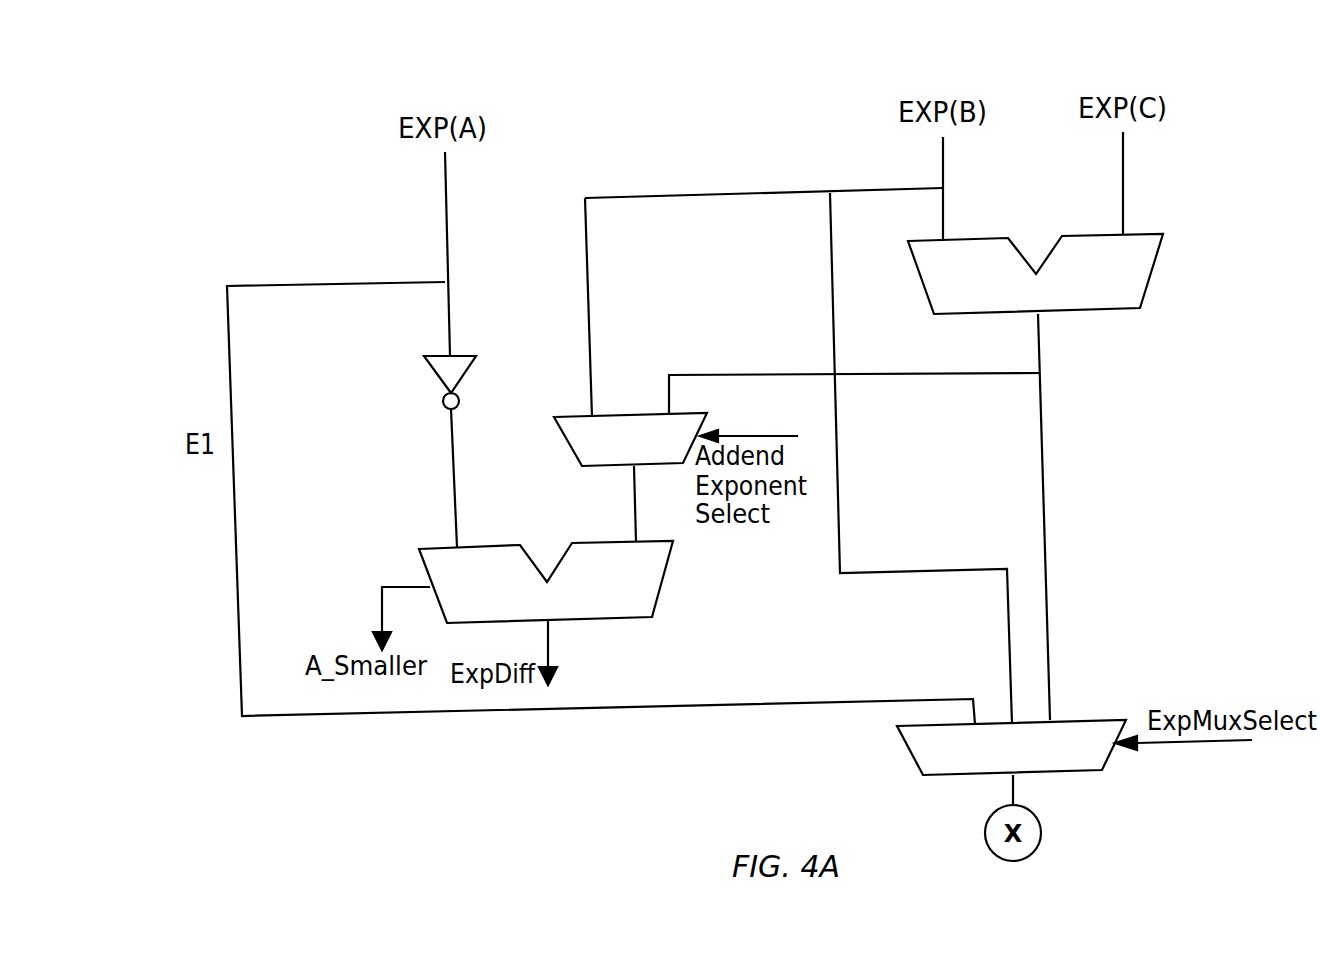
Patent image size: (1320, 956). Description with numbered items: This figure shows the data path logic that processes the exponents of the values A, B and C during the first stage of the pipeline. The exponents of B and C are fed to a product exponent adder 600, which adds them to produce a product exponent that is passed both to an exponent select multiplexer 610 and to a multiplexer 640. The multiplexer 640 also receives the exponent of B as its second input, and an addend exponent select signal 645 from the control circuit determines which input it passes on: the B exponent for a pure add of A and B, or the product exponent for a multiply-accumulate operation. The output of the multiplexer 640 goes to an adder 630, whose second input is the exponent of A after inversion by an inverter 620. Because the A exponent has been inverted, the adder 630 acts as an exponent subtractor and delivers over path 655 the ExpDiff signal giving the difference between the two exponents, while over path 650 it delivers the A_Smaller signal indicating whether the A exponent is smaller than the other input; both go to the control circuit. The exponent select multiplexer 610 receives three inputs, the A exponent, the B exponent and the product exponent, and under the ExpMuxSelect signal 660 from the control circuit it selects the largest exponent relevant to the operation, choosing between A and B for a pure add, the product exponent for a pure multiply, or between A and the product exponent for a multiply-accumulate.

The product exponent adder 600 is at (958, 237).
The exponent select multiplexer 610 is at (1067, 720).
The inverter 620 is at (450, 355).
The adder 630 is at (465, 547).
The multiplexer 640 is at (600, 417).
The addend exponent select signal 645 is at (735, 437).
The path for A_Smaller signal 650 is at (381, 622).
The path for ExpDiff signal 655 is at (550, 625).
The ExpMuxSelect signal 660 is at (1167, 745).